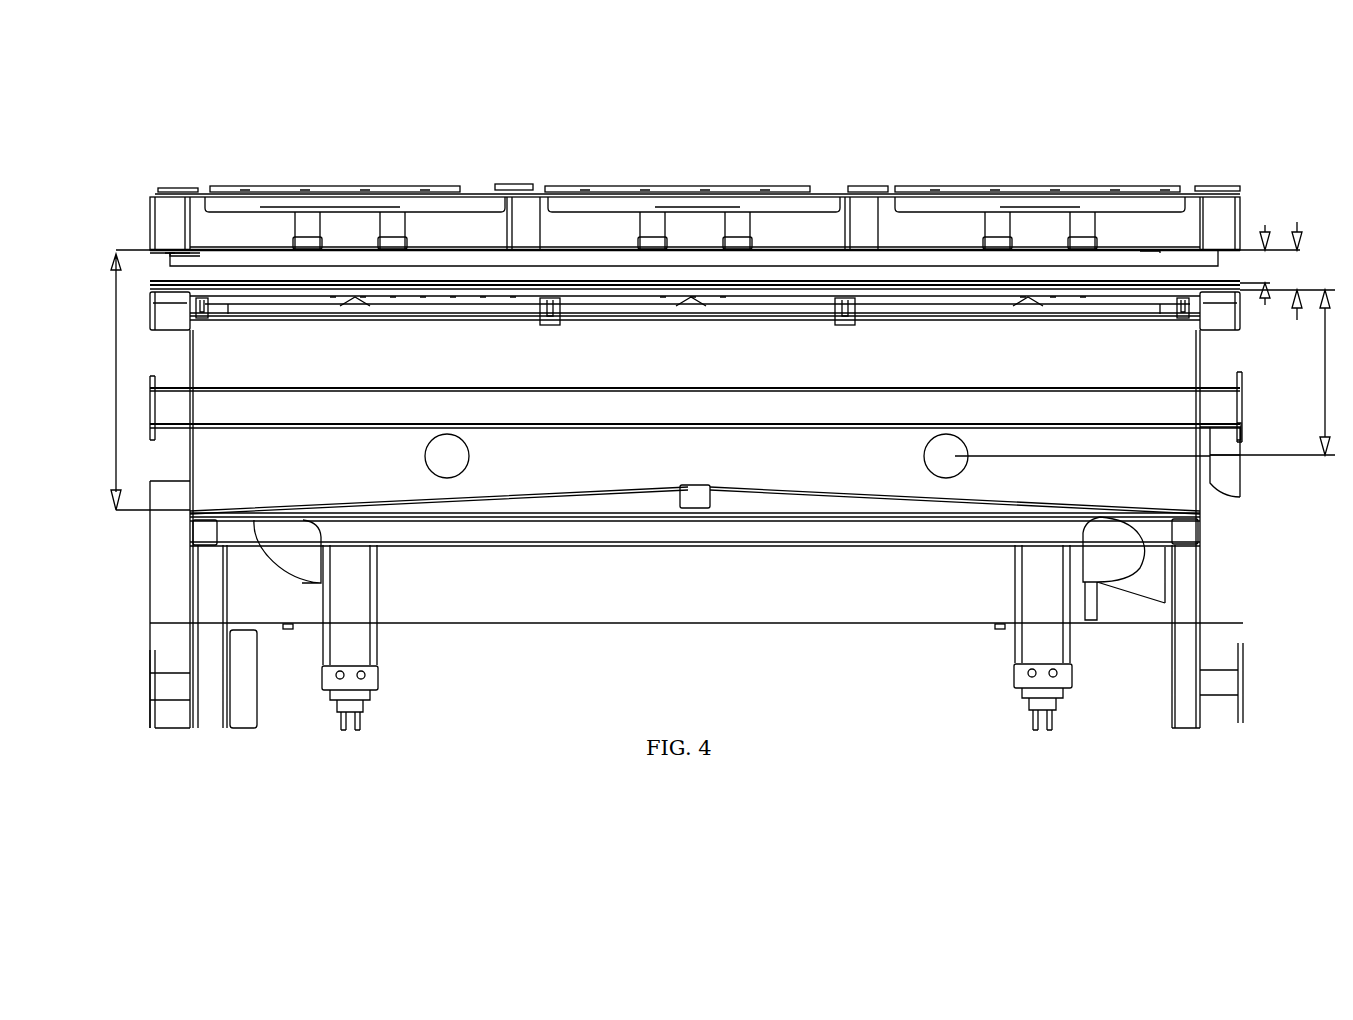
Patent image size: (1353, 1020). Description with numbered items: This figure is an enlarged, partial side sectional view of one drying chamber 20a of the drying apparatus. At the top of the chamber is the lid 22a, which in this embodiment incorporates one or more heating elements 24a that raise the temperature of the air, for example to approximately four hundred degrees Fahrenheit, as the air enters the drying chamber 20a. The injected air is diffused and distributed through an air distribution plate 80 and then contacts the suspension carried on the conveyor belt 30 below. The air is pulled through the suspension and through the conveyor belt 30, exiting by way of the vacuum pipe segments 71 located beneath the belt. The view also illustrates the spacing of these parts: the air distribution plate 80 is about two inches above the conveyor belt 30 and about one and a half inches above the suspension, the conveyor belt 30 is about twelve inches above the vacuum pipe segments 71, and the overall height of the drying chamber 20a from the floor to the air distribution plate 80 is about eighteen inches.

The drying chamber 20a is at (428, 130).
The lid 22a is at (1182, 188).
The heating elements 24a is at (1007, 190).
The air distribution plate 80 is at (157, 250).
The conveyor belt 30 is at (152, 288).
The vacuum pipe segments 71 is at (449, 470).